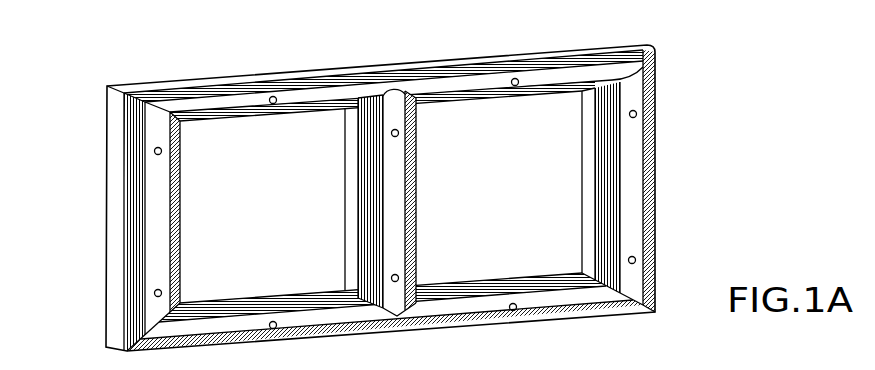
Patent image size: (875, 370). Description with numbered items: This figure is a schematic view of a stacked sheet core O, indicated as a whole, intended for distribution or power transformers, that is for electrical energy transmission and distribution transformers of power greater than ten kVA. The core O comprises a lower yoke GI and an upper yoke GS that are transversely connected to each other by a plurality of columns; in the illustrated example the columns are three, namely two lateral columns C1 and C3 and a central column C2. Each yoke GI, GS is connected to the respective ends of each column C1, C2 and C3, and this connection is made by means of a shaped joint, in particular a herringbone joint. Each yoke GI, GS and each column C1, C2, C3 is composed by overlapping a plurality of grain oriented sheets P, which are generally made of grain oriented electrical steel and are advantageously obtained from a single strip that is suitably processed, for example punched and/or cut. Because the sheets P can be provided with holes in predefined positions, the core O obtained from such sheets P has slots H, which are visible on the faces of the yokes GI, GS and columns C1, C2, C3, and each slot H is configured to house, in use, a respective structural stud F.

The sheet core O is at (466, 189).
The upper yoke GS is at (485, 72).
The lower yoke GI is at (593, 302).
The lateral column C1 is at (157, 188).
The central column C2 is at (398, 163).
The lateral column C3 is at (632, 142).
The slot H is at (375, 194).
The structural stud F is at (516, 79).
The grain oriented sheet P is at (317, 78).